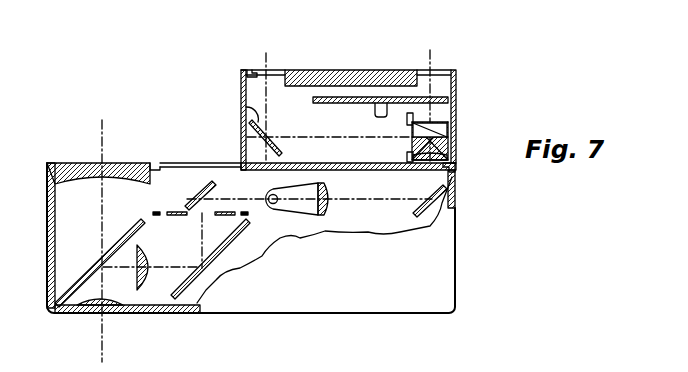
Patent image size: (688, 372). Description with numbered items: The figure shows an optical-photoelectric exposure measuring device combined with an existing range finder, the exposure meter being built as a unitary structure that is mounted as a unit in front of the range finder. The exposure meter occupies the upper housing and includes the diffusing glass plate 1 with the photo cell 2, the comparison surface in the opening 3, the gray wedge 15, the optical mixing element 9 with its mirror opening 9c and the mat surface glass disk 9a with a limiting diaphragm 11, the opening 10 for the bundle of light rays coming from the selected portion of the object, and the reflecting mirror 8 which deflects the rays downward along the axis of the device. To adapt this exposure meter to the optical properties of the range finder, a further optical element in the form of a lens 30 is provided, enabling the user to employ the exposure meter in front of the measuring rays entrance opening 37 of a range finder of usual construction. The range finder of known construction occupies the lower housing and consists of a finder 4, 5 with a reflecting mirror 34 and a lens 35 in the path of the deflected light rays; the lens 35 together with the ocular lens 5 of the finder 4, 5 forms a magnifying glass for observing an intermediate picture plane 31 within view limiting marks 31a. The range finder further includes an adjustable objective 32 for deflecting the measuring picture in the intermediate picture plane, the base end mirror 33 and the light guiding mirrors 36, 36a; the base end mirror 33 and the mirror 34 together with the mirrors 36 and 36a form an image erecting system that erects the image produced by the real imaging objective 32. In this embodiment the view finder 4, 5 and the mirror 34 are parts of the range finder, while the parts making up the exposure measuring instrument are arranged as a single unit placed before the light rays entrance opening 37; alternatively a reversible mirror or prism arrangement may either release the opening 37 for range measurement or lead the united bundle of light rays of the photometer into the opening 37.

The diffusing glass plate 1 is at (337, 70).
The photo cell 2 is at (358, 82).
The opening 3 is at (437, 83).
The finder 4 is at (65, 172).
The ocular lens 5 is at (90, 301).
The reflecting mirror 8 is at (249, 121).
The optical mixing element 9 is at (440, 146).
The mat surface glass disk 9a is at (415, 144).
The mirror opening 9c is at (455, 125).
The opening 10 is at (253, 72).
The limiting diaphragm 11 is at (410, 122).
The gray wedge 15 is at (318, 97).
The lens 30 is at (457, 167).
The intermediate picture plane 31 is at (203, 217).
The view limiting marks 31a is at (163, 210).
The adjustable objective 32 is at (330, 217).
The base end mirror 33 is at (430, 208).
The reflecting mirror 34 is at (83, 282).
The lens 35 is at (140, 291).
The light guiding mirror 36 is at (178, 298).
The light guiding mirror 36a is at (200, 207).
The measuring rays entrance opening 37 is at (440, 172).